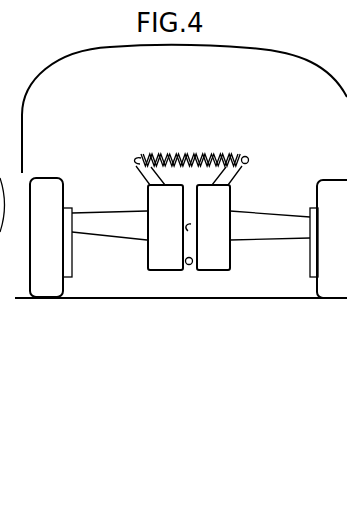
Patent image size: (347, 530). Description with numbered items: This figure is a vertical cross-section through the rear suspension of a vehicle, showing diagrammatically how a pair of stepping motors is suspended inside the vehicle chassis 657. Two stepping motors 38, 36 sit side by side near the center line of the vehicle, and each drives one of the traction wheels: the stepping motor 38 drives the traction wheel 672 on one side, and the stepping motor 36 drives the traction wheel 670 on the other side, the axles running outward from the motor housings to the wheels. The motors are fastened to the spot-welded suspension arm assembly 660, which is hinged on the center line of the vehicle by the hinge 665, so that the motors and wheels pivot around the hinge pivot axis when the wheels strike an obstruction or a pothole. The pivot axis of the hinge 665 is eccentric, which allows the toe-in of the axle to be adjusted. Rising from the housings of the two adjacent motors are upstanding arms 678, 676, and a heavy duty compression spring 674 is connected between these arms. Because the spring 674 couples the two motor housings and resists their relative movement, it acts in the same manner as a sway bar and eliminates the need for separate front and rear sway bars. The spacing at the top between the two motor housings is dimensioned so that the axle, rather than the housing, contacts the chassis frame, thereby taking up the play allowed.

The vehicle chassis 657 is at (80, 52).
The traction wheel 672 is at (46, 190).
The rear suspension arm assembly 660 is at (83, 212).
The upstanding arm 678 is at (143, 176).
The stepping motor 38 is at (157, 256).
The hinge 665 is at (188, 266).
The stepping motor 36 is at (212, 255).
The heavy duty compression spring 674 is at (203, 151).
The upstanding arm 676 is at (237, 174).
The traction wheel 670 is at (323, 252).